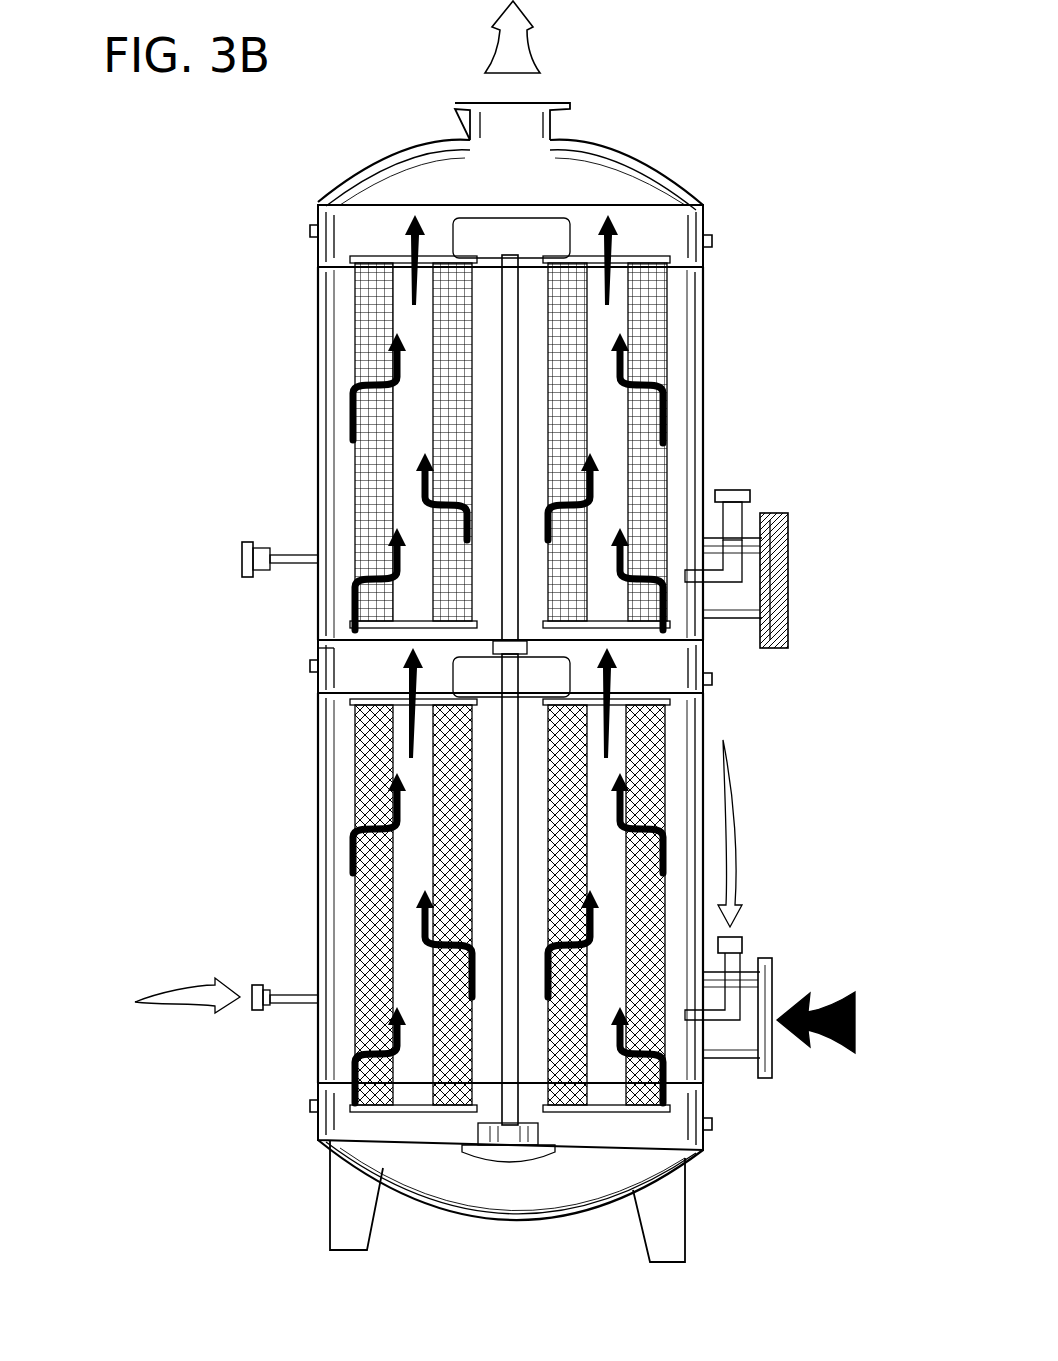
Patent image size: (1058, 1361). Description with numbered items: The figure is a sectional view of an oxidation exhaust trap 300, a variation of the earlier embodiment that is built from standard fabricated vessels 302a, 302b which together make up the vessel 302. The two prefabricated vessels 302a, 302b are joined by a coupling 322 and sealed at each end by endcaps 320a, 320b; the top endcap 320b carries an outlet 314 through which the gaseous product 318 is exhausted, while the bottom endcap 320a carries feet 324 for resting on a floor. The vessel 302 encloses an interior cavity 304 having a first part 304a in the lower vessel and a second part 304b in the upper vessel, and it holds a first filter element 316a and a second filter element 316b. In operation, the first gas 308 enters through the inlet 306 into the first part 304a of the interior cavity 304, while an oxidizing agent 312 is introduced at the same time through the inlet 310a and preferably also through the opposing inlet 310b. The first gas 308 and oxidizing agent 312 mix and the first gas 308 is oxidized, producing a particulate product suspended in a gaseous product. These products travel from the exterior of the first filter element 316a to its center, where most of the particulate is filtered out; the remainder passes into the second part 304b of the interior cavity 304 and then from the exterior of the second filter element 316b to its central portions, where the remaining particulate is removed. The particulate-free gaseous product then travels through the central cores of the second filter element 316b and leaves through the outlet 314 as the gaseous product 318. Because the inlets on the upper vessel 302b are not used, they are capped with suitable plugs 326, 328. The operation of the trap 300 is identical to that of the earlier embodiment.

The oxidation exhaust trap 300 is at (768, 156).
The vessel 302 is at (272, 363).
The standard fabricated vessel 302a is at (700, 795).
The standard fabricated vessel 302b is at (703, 445).
The interior cavity 304 is at (318, 650).
The first part of interior cavity 304a is at (490, 779).
The second part of interior cavity 304b is at (530, 362).
The inlet 306 is at (765, 985).
The first gas 308 is at (855, 1020).
The inlet 310a is at (735, 935).
The inlet 310b is at (258, 985).
The oxidizing agent 312 is at (745, 860).
The outlet 314 is at (533, 104).
The first filter element 316a is at (640, 745).
The second filter element 316b is at (652, 382).
The gaseous product 318 is at (523, 50).
The endcap 320a is at (470, 1185).
The endcap 320b is at (380, 176).
The coupling 322 is at (703, 697).
The feet 324 is at (330, 1193).
The plug 326 is at (788, 565).
The plug 328 is at (745, 480).